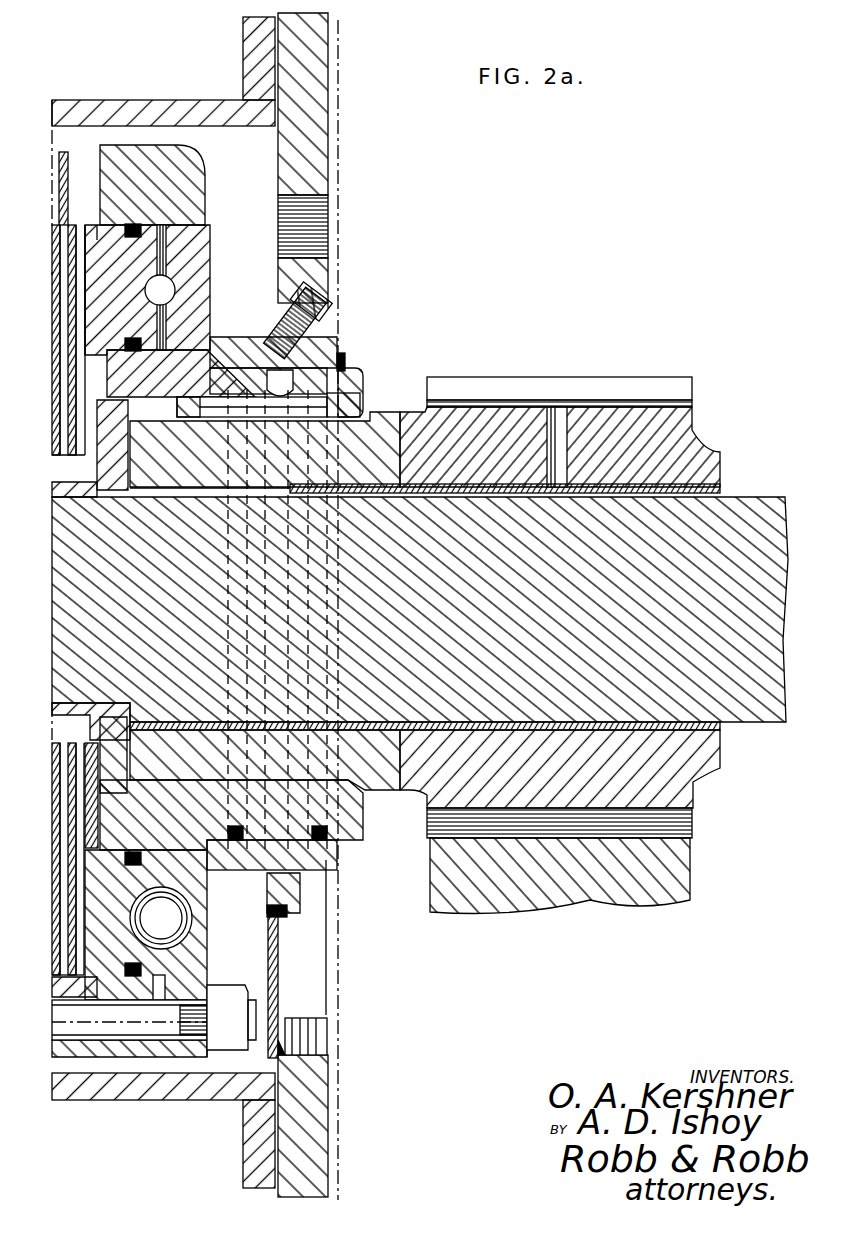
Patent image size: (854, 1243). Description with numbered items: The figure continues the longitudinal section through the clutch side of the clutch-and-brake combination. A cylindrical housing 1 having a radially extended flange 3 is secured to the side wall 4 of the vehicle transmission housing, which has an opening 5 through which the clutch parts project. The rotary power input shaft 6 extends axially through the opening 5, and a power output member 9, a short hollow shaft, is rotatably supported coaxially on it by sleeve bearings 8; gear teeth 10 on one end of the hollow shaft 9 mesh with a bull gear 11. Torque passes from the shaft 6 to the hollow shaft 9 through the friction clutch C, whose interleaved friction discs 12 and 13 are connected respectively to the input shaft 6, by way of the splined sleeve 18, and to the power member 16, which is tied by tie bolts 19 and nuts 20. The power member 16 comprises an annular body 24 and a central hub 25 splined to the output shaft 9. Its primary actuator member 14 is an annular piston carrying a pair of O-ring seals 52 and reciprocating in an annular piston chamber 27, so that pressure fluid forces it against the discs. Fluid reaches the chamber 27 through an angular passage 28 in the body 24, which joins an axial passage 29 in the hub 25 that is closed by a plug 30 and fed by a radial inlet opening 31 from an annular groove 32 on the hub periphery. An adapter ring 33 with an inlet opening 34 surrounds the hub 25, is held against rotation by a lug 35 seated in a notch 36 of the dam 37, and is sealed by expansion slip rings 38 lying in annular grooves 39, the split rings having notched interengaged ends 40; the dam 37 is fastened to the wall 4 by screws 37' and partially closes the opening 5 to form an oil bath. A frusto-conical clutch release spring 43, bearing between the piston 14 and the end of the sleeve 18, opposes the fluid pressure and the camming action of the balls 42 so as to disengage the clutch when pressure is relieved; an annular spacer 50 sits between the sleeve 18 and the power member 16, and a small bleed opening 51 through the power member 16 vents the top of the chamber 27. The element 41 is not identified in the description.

The housing 1 is at (172, 112).
The radially extended flange 3 is at (258, 42).
The side wall of the transmission housing 4 is at (316, 52).
The opening 5 is at (288, 244).
The power input shaft 6 is at (52, 572).
The sleeve bearings 8 is at (716, 488).
The power output member 9 is at (690, 422).
The gear teeth 10 is at (688, 384).
The bull gear 11 is at (680, 850).
The friction discs 12 is at (55, 228).
The friction discs 13 is at (62, 168).
The primary actuator member 14 is at (88, 230).
The power member 16 is at (195, 168).
The splined sleeve 18 is at (98, 470).
The tie bolts 19 is at (190, 1018).
The nuts 20 is at (222, 990).
The annular body 24 is at (190, 250).
The central hub 25 is at (362, 374).
The annular piston chamber 27 is at (94, 226).
The fluid passage 28 is at (182, 362).
The axially extended passage 29 is at (222, 395).
The plug 30 is at (352, 400).
The inlet opening 31 is at (262, 370).
The annular groove 32 is at (330, 344).
The adapter ring 33 is at (325, 325).
The inlet opening 34 is at (316, 305).
The radial projection 35 is at (278, 900).
The notch 36 is at (278, 912).
The baffle or dam 37 is at (294, 985).
The screws 37' is at (332, 1036).
The annular expansion slip rings 38 is at (345, 832).
The annular groove 39 is at (340, 818).
The notched interengaged ends 40 is at (232, 606).
The ball seal 41 is at (150, 272).
The balls 42 is at (146, 925).
The clutch release spring 43 is at (92, 808).
The annular spacer 50 is at (100, 489).
The bleed opening 51 is at (200, 226).
The O-ring seals 52 is at (128, 860).
The friction clutch C is at (52, 272).